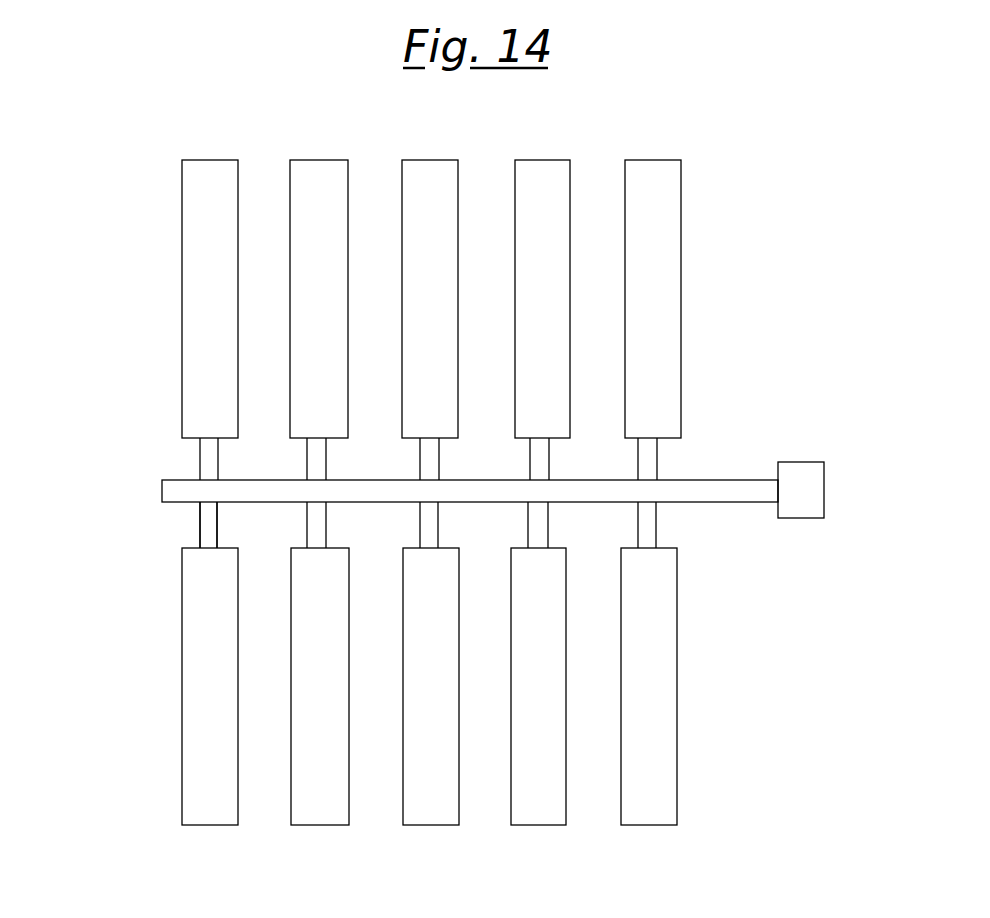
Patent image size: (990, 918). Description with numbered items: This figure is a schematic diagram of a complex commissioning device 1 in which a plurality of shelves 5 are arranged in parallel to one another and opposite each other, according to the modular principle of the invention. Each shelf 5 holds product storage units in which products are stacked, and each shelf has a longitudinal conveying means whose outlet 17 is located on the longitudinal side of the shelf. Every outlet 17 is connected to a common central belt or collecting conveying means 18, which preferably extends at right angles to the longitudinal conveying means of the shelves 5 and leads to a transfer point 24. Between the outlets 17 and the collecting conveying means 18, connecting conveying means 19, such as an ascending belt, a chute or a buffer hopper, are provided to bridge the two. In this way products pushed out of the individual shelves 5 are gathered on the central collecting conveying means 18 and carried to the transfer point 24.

The commissioning device 1 is at (894, 204).
The shelf 5 is at (216, 144).
The outlet 17 is at (666, 425).
The collecting conveying means 18 is at (732, 461).
The connecting conveying means 19 is at (186, 528).
The transfer point 24 is at (795, 535).